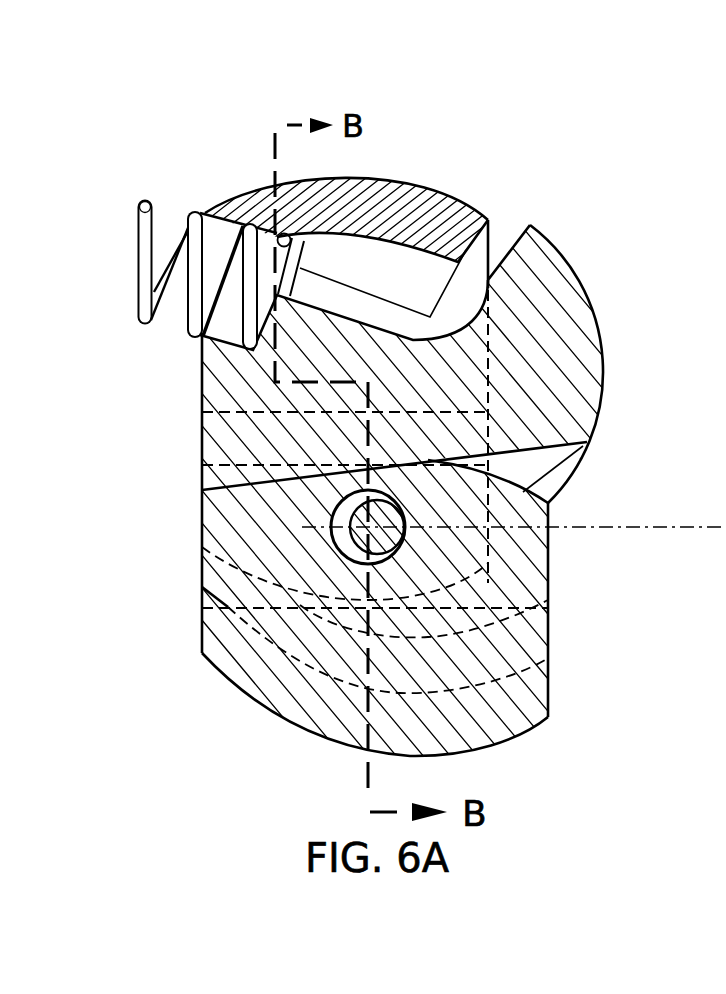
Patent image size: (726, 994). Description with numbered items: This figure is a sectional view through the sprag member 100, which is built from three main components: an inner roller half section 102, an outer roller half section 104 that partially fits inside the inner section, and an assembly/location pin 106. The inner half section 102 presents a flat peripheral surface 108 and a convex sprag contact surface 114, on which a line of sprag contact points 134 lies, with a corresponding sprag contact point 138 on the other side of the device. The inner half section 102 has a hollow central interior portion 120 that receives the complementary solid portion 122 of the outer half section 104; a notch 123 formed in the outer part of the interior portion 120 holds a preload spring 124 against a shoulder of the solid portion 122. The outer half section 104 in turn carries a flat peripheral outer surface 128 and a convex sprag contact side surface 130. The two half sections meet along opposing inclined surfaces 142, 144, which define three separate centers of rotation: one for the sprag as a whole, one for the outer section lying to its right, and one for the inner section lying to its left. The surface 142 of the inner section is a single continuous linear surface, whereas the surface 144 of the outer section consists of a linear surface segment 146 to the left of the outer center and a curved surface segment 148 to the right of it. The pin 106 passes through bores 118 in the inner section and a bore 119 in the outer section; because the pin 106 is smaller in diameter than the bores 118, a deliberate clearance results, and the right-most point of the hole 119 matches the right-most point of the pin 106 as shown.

The sprag member 100 is at (477, 183).
The inner roller half section 102 is at (490, 240).
The outer roller half section 104 is at (312, 632).
The assembly/location pin 106 is at (388, 542).
The flat peripheral surface 108 is at (425, 205).
The convex sprag contact surface 114 is at (398, 323).
The bores 118 is at (332, 521).
The bore 119 is at (405, 530).
The hollow central interior portion 120 is at (462, 262).
The solid portion 122 is at (557, 287).
The notch 123 is at (223, 232).
The preload spring 124 is at (202, 333).
The flat peripheral outer surface 128 is at (315, 738).
The convex sprag contact side surface 130 is at (503, 700).
The line of sprag contact points 134 is at (362, 222).
The sprag contact point 138 is at (340, 660).
The inclined surface 142 is at (510, 455).
The inclined surface 144 is at (232, 485).
The linear surface segment 146 is at (295, 480).
The curved surface segment 148 is at (565, 480).